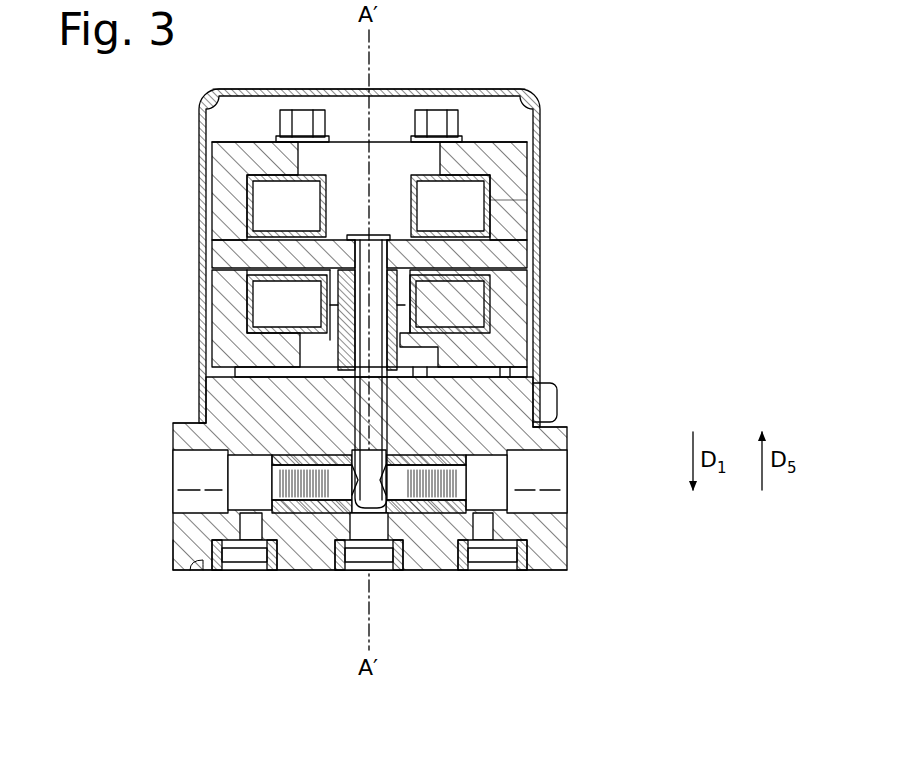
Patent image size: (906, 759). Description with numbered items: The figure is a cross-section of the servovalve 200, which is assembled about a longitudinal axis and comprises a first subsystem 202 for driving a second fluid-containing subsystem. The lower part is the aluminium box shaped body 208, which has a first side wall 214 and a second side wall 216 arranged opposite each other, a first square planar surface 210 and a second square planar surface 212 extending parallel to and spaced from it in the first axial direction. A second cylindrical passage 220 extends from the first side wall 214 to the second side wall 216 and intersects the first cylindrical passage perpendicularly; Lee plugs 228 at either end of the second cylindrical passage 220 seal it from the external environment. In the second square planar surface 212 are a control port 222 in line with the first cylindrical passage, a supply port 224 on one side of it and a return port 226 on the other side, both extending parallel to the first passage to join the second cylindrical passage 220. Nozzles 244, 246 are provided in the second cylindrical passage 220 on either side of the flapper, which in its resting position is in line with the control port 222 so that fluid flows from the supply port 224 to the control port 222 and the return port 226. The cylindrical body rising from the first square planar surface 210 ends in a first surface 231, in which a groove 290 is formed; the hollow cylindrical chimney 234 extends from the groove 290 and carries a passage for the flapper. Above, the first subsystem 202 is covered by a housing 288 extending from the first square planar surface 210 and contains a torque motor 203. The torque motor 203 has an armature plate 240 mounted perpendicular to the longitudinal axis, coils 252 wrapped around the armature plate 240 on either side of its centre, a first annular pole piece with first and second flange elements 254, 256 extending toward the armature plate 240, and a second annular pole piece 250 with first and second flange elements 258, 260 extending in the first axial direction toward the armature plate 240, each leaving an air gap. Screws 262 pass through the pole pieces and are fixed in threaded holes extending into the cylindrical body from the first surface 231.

The servovalve 200 is at (580, 122).
The first subsystem 202 is at (545, 97).
The torque motor 203 is at (113, 105).
The box shaped body 208 is at (545, 535).
The first square planar surface 210 is at (220, 395).
The second square planar surface 212 is at (200, 572).
The first side wall 214 is at (195, 435).
The second side wall 216 is at (555, 500).
The second cylindrical passage 220 is at (240, 480).
The control port 222 is at (375, 572).
The supply port 224 is at (248, 572).
The return port 226 is at (492, 572).
The Lee plugs 228 is at (515, 475).
The first surface 231 is at (212, 372).
The hollow cylindrical chimney 234 is at (405, 343).
The armature plate 240 is at (530, 255).
The nozzle 244 is at (303, 520).
The nozzle 246 is at (440, 525).
The second annular pole piece 250 is at (515, 152).
The coils 252 is at (247, 208).
The first flange element of first annular pole piece 254 is at (225, 310).
The second flange element of first annular pole piece 256 is at (512, 300).
The first flange element of second annular pole piece 258 is at (232, 162).
The second flange element of second annular pole piece 260 is at (512, 215).
The screws 262 is at (302, 117).
The housing 288 is at (255, 92).
The groove 290 is at (545, 398).